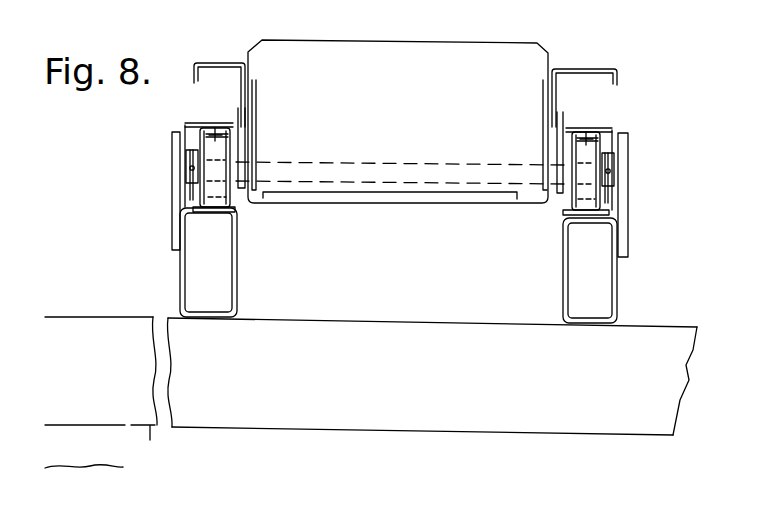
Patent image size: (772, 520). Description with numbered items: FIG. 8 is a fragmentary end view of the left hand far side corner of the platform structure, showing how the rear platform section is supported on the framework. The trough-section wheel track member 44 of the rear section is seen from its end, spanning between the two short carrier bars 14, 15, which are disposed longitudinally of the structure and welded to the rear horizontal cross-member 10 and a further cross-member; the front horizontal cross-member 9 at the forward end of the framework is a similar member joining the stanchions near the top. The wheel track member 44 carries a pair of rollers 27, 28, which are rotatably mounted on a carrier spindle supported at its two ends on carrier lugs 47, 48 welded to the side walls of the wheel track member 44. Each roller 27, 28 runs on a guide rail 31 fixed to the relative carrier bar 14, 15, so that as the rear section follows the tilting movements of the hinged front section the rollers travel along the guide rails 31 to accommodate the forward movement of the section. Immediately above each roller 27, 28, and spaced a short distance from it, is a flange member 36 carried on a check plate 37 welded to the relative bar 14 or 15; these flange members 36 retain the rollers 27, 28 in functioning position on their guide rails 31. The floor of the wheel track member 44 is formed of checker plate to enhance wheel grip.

The front horizontal cross-member 9 is at (644, 310).
The rear horizontal cross-member 10 is at (291, 416).
The carrier bar 14 is at (237, 251).
The carrier bar 15 is at (618, 283).
The roller 27 is at (215, 130).
The roller 28 is at (600, 131).
The guide rail 31 is at (208, 208).
The flange member 36 is at (187, 124).
The check plate 37 is at (172, 155).
The wheel track member 44 is at (420, 200).
The carrier lug 47 is at (240, 130).
The carrier lug 48 is at (563, 118).